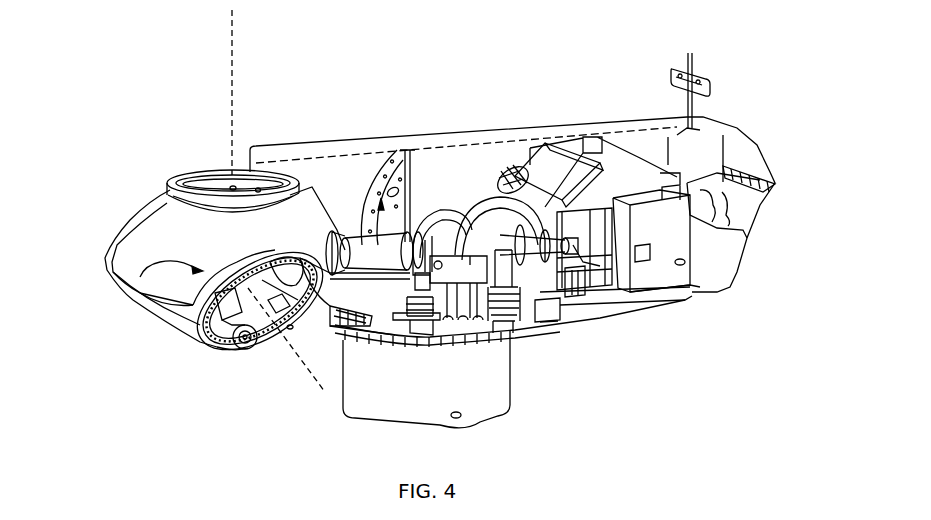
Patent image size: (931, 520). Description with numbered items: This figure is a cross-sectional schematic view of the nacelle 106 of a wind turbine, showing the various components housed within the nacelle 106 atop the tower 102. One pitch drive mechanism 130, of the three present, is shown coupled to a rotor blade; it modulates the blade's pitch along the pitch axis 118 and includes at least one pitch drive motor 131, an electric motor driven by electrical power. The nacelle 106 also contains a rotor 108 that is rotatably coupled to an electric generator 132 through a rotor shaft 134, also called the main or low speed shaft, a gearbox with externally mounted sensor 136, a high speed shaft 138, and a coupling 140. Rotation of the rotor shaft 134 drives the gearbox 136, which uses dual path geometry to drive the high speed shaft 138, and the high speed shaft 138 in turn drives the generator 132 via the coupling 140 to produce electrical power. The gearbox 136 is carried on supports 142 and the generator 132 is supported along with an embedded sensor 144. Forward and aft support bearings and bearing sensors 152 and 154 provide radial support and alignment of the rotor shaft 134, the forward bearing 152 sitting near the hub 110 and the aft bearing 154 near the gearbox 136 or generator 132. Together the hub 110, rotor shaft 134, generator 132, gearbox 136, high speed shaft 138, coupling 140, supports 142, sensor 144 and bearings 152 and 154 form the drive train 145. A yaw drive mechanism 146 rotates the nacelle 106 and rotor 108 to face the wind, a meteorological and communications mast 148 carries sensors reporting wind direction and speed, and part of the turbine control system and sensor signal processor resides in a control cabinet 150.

The tower 102 is at (462, 418).
The nacelle 106 is at (352, 90).
The rotor 108 is at (97, 259).
The hub 110 is at (165, 198).
The pitch axis 118 is at (233, 17).
The pitch drive mechanism 130 is at (140, 290).
The pitch drive motor 131 is at (210, 292).
The electric generator 132 is at (573, 245).
The rotor shaft 134 is at (350, 240).
The gearbox with externally mounted sensor 136 is at (472, 197).
The high speed shaft 138 is at (545, 323).
The coupling 140 is at (540, 210).
The supports 142 is at (492, 334).
The embedded sensor 144 is at (560, 293).
The drive train 145 is at (381, 198).
The yaw drive mechanism 146 is at (418, 333).
The meteorological and communications mast 148 is at (713, 82).
The control cabinet 150 is at (688, 263).
The forward support bearing and bearing sensor 152 is at (343, 273).
The aft support bearing and bearing sensor 154 is at (437, 212).